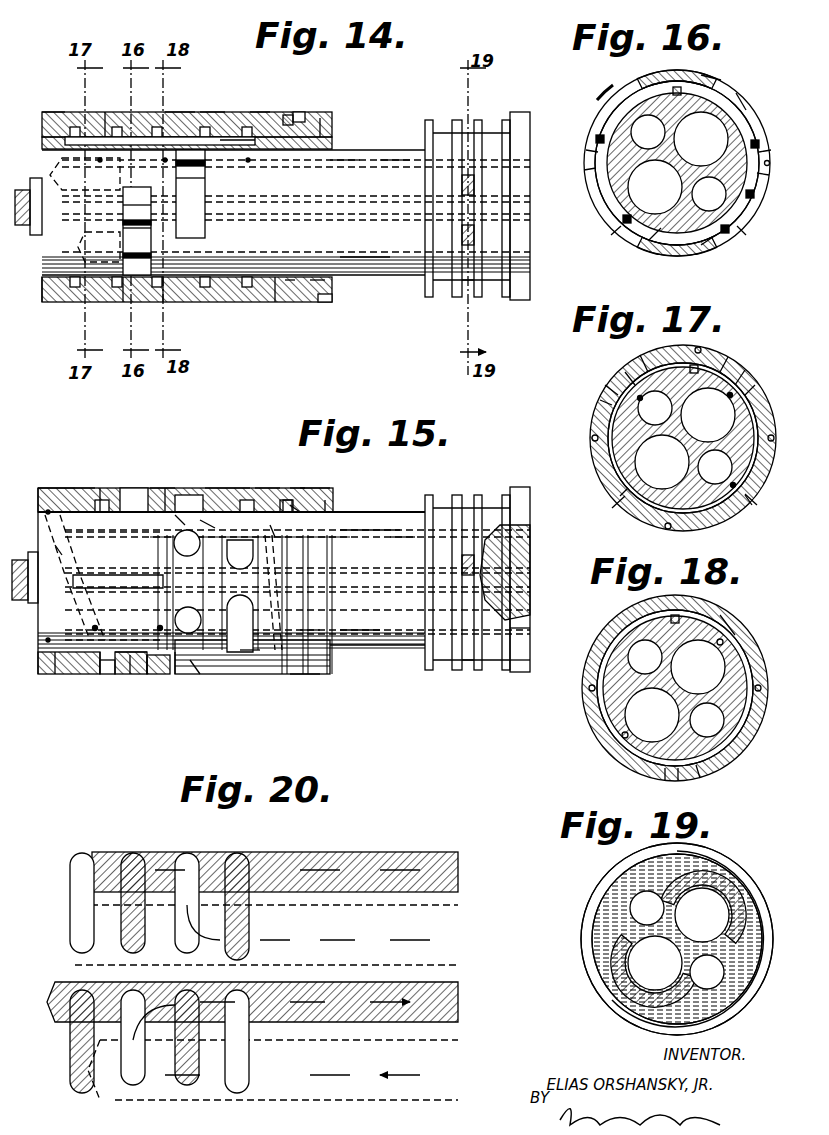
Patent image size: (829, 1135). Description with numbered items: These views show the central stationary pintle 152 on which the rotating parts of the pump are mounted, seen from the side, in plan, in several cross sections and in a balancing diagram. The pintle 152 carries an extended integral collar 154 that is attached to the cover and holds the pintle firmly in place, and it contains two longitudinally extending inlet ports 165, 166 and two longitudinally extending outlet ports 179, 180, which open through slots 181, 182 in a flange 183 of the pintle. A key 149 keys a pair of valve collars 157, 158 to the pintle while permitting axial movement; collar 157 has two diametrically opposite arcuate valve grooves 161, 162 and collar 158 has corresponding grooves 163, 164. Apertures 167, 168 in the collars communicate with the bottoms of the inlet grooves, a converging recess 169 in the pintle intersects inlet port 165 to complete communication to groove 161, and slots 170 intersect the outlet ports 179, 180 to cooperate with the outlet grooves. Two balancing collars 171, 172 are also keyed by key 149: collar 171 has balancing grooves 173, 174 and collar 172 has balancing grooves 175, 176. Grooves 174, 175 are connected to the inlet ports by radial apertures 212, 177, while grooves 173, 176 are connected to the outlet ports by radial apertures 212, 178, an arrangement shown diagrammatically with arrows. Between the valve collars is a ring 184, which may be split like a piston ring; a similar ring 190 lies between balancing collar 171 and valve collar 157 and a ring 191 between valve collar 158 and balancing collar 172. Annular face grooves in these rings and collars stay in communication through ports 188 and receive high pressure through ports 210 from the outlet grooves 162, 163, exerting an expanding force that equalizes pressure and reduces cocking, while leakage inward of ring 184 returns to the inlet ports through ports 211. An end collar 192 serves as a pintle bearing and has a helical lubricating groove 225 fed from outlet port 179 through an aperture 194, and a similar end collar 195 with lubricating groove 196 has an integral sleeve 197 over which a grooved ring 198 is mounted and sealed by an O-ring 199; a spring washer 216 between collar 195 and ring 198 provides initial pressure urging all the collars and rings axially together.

In FIG. 14, the key 149 is at (235, 140).
In FIG. 15, the key 149 is at (100, 580).
In FIG. 16, the key 149 is at (677, 87).
In FIG. 17, the key 149 is at (694, 365).
In FIG. 18, the key 149 is at (677, 615).
In FIG. 14, the pintle 152 is at (375, 160).
In FIG. 15, the pintle 152 is at (345, 530).
In FIG. 16, the pintle 152 is at (691, 100).
In FIG. 17, the pintle 152 is at (705, 380).
In FIG. 18, the pintle 152 is at (652, 628).
In FIG. 19, the pintle 152 is at (612, 955).
In FIG. 14, the extended integral collar 154 is at (518, 115).
In FIG. 15, the extended integral collar 154 is at (518, 490).
In FIG. 14, the valve collar 157 is at (128, 295).
In FIG. 15, the valve collar 157 is at (110, 674).
In FIG. 16, the valve collar 157 is at (701, 76).
In FIG. 14, the valve collar 158 is at (180, 118).
In FIG. 15, the valve collar 158 is at (160, 488).
In FIG. 15, the arcuate valve groove 161 is at (135, 512).
In FIG. 16, the arcuate valve groove 161 is at (618, 90).
In FIG. 20, the arcuate valve groove 161 is at (133, 1085).
In FIG. 15, the arcuate valve groove 162 is at (152, 674).
In FIG. 16, the arcuate valve groove 162 is at (736, 98).
In FIG. 20, the arcuate valve groove 162 is at (133, 853).
In FIG. 15, the valve groove 163 is at (185, 512).
In FIG. 20, the valve groove 163 is at (187, 1085).
In FIG. 15, the valve groove 164 is at (178, 680).
In FIG. 20, the valve groove 164 is at (187, 853).
In FIG. 14, the longitudinal inlet port 165 is at (363, 258).
In FIG. 15, the longitudinal inlet port 165 is at (375, 530).
In FIG. 16, the longitudinal inlet port 165 is at (655, 187).
In FIG. 17, the longitudinal inlet port 165 is at (662, 462).
In FIG. 18, the longitudinal inlet port 165 is at (652, 715).
In FIG. 19, the longitudinal inlet port 165 is at (655, 963).
In FIG. 20, the longitudinal inlet port 165 is at (455, 1048).
In FIG. 14, the longitudinal inlet port 166 is at (398, 158).
In FIG. 15, the longitudinal inlet port 166 is at (352, 632).
In FIG. 16, the longitudinal inlet port 166 is at (701, 139).
In FIG. 17, the longitudinal inlet port 166 is at (708, 415).
In FIG. 18, the longitudinal inlet port 166 is at (698, 667).
In FIG. 19, the longitudinal inlet port 166 is at (702, 915).
In FIG. 20, the longitudinal inlet port 166 is at (450, 915).
In FIG. 15, the aperture 167 is at (133, 512).
In FIG. 16, the aperture 167 is at (597, 138).
In FIG. 15, the aperture 168 is at (190, 612).
In FIG. 16, the aperture 168 is at (757, 143).
In FIG. 14, the converging recess 169 is at (205, 178).
In FIG. 16, the converging recess 169 is at (656, 232).
In FIG. 14, the slot 170 is at (123, 205).
In FIG. 16, the slot 170 is at (711, 240).
In FIG. 14, the balancing collar 171 is at (70, 112).
In FIG. 15, the balancing collar 171 is at (70, 488).
In FIG. 17, the balancing collar 171 is at (635, 382).
In FIG. 14, the balancing collar 172 is at (258, 112).
In FIG. 15, the balancing collar 172 is at (240, 488).
In FIG. 15, the balancing groove 173 is at (85, 488).
In FIG. 17, the balancing groove 173 is at (620, 395).
In FIG. 20, the balancing groove 173 is at (84, 1093).
In FIG. 15, the balancing groove 174 is at (70, 674).
In FIG. 17, the balancing groove 174 is at (750, 392).
In FIG. 20, the balancing groove 174 is at (84, 853).
In FIG. 15, the balancing groove 175 is at (265, 488).
In FIG. 20, the balancing groove 175 is at (237, 1093).
In FIG. 15, the balancing groove 176 is at (250, 674).
In FIG. 20, the balancing groove 176 is at (240, 853).
In FIG. 17, the radial aperture 177 is at (740, 380).
In FIG. 17, the radial aperture 178 is at (612, 400).
In FIG. 14, the outlet port 179 is at (343, 158).
In FIG. 15, the outlet port 179 is at (402, 535).
In FIG. 16, the outlet port 179 is at (641, 118).
In FIG. 17, the outlet port 179 is at (640, 412).
In FIG. 18, the outlet port 179 is at (632, 655).
In FIG. 19, the outlet port 179 is at (634, 906).
In FIG. 20, the outlet port 179 is at (455, 995).
In FIG. 14, the outlet port 180 is at (123, 228).
In FIG. 15, the outlet port 180 is at (520, 628).
In FIG. 16, the outlet port 180 is at (723, 200).
In FIG. 17, the outlet port 180 is at (718, 484).
In FIG. 18, the outlet port 180 is at (714, 732).
In FIG. 19, the outlet port 180 is at (722, 972).
In FIG. 20, the outlet port 180 is at (455, 860).
In FIG. 15, the slot 181 is at (478, 495).
In FIG. 19, the slot 181 is at (700, 862).
In FIG. 14, the slot 182 is at (462, 298).
In FIG. 15, the slot 182 is at (465, 672).
In FIG. 19, the slot 182 is at (655, 1005).
In FIG. 19, the flange 183 is at (598, 932).
In FIG. 14, the ring 184 is at (168, 302).
In FIG. 15, the ring 184 is at (168, 488).
In FIG. 18, the ring 184 is at (720, 625).
In FIG. 15, the port 188 is at (200, 680).
In FIG. 18, the port 188 is at (760, 685).
In FIG. 14, the ring 190 is at (110, 125).
In FIG. 15, the ring 190 is at (105, 488).
In FIG. 14, the ring 191 is at (210, 112).
In FIG. 15, the ring 191 is at (215, 488).
In FIG. 14, the end collar 192 is at (52, 302).
In FIG. 15, the end collar 192 is at (45, 488).
In FIG. 15, the aperture 194 is at (60, 550).
In FIG. 14, the end collar 195 is at (290, 115).
In FIG. 15, the end collar 195 is at (285, 500).
In FIG. 15, the lubricating groove 196 is at (272, 522).
In FIG. 14, the sleeve member 197 is at (325, 118).
In FIG. 15, the sleeve member 197 is at (328, 500).
In FIG. 14, the grooved ring 198 is at (318, 302).
In FIG. 15, the grooved ring 198 is at (310, 488).
In FIG. 14, the O-ring 199 is at (290, 302).
In FIG. 15, the O-ring 199 is at (296, 512).
In FIG. 15, the port 210 is at (182, 522).
In FIG. 16, the port 210 is at (769, 163).
In FIG. 14, the port 211 is at (165, 160).
In FIG. 15, the port 211 is at (160, 628).
In FIG. 18, the port 211 is at (722, 640).
In FIG. 14, the radial aperture 212 is at (100, 160).
In FIG. 15, the radial aperture 212 is at (95, 628).
In FIG. 17, the radial aperture 212 is at (640, 398).
In FIG. 14, the spring washer 216 is at (280, 302).
In FIG. 15, the spring washer 216 is at (296, 488).
In FIG. 15, the helical groove 225 is at (48, 512).